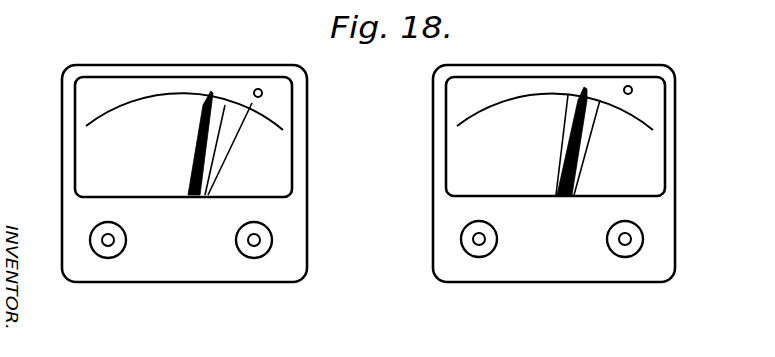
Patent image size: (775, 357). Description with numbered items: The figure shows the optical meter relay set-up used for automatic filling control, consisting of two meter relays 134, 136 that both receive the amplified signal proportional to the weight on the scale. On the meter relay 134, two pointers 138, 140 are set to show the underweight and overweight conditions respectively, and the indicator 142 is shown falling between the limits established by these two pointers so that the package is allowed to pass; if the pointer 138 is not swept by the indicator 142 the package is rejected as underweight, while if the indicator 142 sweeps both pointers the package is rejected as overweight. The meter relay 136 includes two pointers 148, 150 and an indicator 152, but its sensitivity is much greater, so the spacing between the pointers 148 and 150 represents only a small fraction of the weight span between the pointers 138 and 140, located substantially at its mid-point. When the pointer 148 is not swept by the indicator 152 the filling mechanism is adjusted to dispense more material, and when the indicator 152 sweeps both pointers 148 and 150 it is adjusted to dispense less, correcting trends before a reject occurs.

The optical meter relay 134 is at (636, 65).
The optical meter relay 136 is at (243, 66).
The pointer 138 is at (563, 119).
The pointer 140 is at (585, 153).
The indicator 142 is at (580, 96).
The pointer 148 is at (218, 126).
The pointer 150 is at (233, 148).
The indicator 152 is at (209, 99).